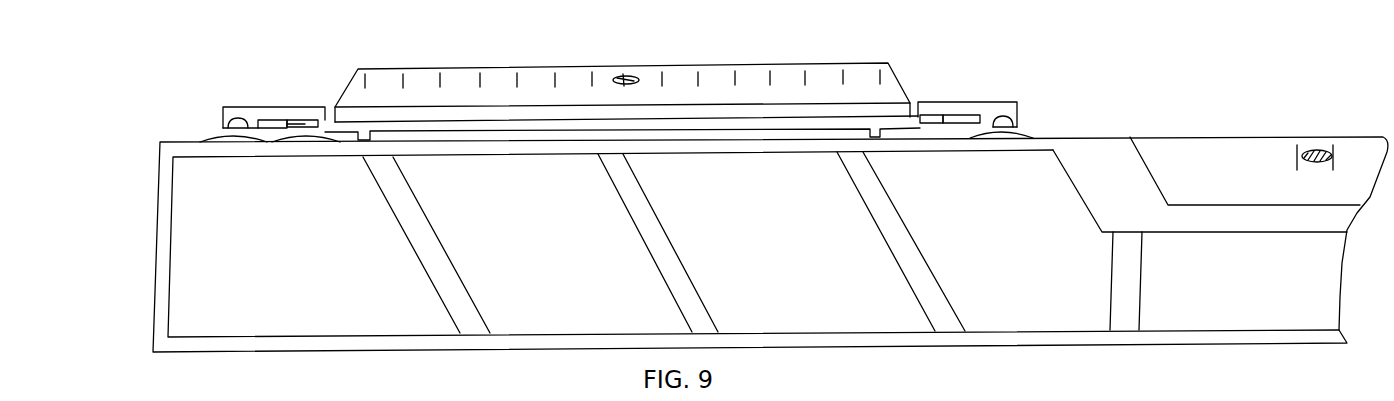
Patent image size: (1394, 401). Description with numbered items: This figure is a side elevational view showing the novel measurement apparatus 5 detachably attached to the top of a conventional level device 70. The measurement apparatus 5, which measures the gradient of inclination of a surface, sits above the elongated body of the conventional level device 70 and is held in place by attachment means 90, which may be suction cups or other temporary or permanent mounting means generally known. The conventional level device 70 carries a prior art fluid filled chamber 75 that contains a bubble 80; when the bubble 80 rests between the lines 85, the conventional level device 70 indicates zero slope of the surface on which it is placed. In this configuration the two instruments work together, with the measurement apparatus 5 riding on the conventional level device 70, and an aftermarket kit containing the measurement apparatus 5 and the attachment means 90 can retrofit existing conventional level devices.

The measurement apparatus 5 is at (185, 80).
The conventional level device 70 is at (1066, 168).
The fluid filled chamber 75 is at (1212, 145).
The bubble 80 is at (1316, 150).
The lines 85 is at (1288, 157).
The attachment means 90 is at (274, 107).